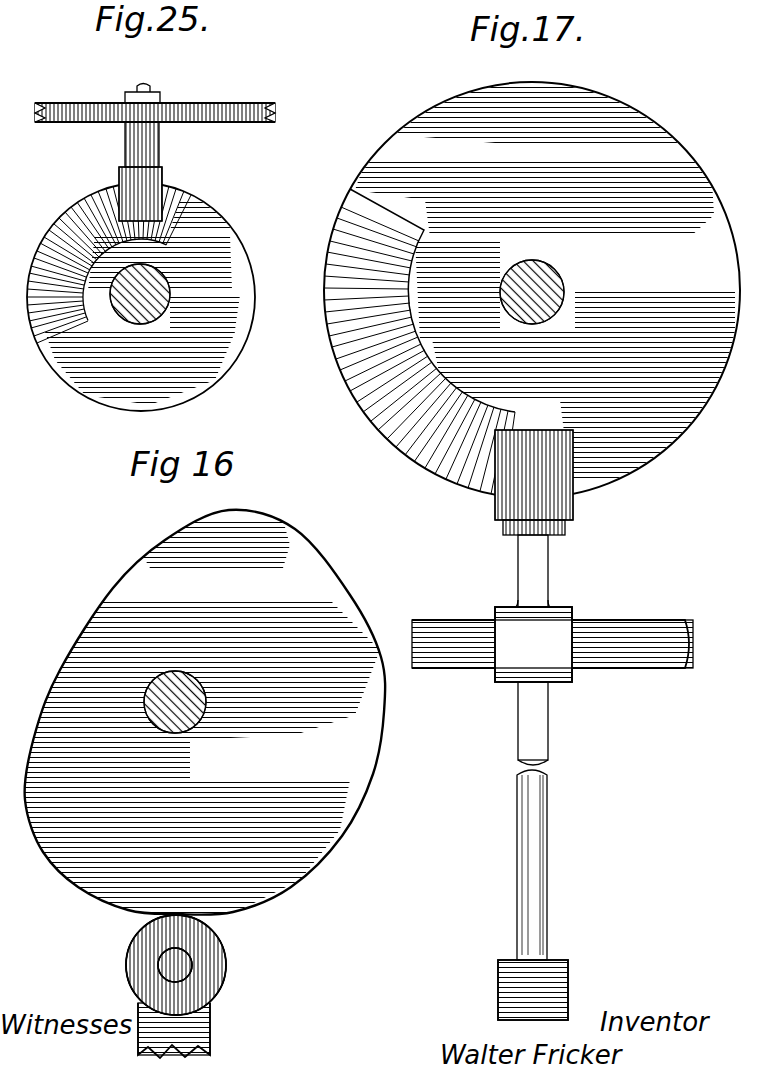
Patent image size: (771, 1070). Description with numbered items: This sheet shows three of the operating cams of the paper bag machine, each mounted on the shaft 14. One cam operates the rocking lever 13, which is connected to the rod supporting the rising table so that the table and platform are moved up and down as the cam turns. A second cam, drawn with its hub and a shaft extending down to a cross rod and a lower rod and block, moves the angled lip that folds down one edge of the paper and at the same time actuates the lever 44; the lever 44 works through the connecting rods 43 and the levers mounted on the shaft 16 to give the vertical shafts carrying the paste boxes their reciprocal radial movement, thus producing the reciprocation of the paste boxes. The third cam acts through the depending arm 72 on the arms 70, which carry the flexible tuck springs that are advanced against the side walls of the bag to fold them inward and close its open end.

In FIG. 16, the rocking lever 13 is at (200, 1027).
In FIG. 25, the shaft 14 is at (168, 288).
In FIG. 17, the shaft 14 is at (558, 278).
In FIG. 16, the shaft 14 is at (163, 696).
In FIG. 17, the shaft 16 is at (627, 619).
In FIG. 17, the connecting rods 43 is at (568, 985).
In FIG. 17, the lever 44 is at (545, 823).
In FIG. 25, the arms 70 is at (234, 106).
In FIG. 25, the depending arm 72 is at (143, 143).